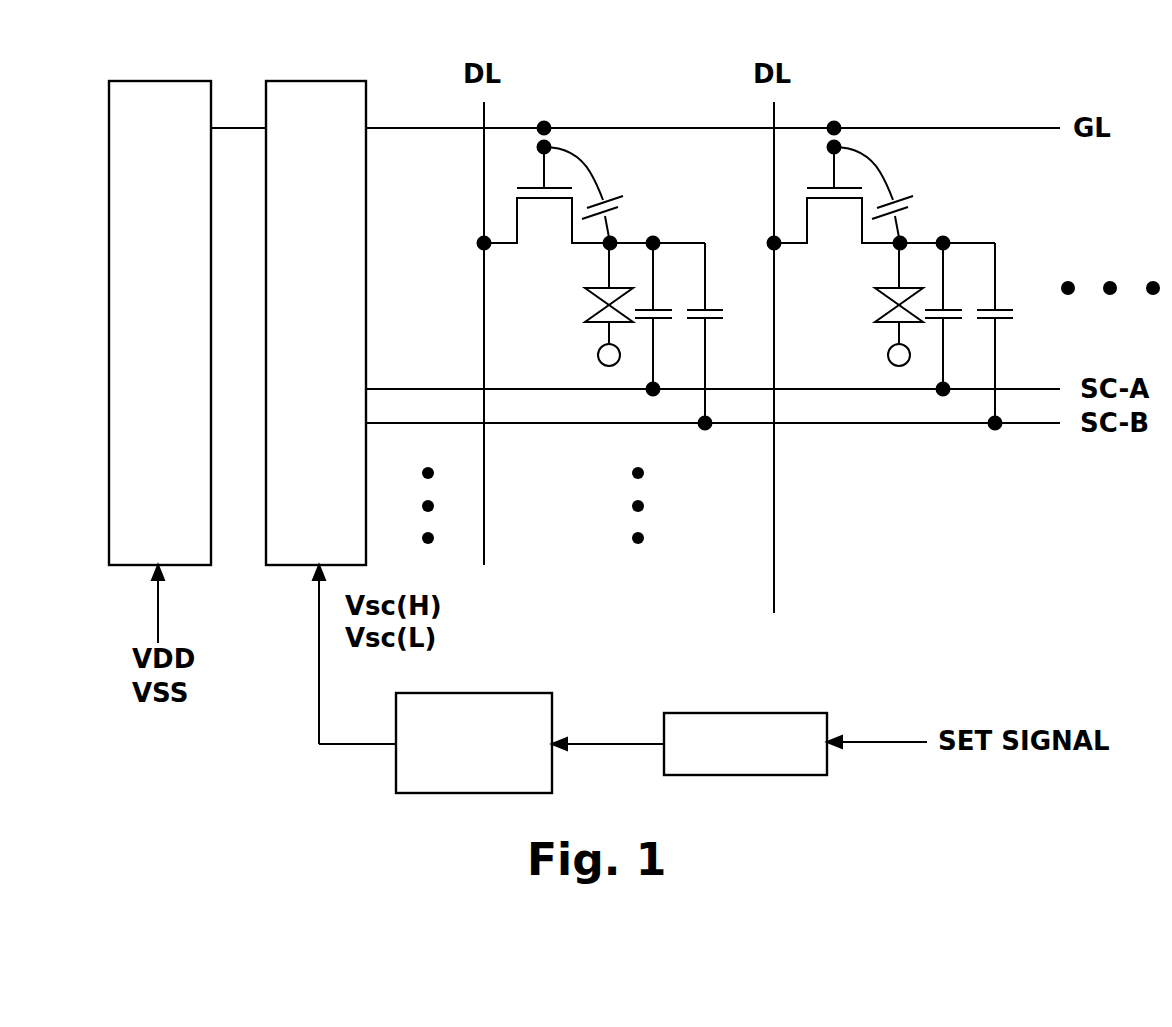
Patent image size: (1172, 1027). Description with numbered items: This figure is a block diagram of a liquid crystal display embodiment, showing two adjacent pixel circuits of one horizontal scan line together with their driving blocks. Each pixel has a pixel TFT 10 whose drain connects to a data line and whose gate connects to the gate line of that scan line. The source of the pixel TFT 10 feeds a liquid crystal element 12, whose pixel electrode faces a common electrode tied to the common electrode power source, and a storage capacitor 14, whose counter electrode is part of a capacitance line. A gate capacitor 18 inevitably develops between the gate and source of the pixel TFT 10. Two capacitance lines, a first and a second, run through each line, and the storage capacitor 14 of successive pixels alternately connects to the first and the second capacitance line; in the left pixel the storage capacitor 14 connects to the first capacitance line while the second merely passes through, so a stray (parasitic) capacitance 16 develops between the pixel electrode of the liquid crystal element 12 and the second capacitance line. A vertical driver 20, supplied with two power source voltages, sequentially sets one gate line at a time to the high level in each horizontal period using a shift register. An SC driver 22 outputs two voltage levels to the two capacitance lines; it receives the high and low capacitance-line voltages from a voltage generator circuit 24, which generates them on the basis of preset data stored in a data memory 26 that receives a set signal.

The pixel TFT 10 is at (737, 186).
The liquid crystal element 12 is at (719, 304).
The storage capacitor 14 is at (808, 319).
The stray (parasitic) capacitance 16 is at (860, 336).
The gate capacitor 18 is at (753, 195).
The vertical driver 20 is at (160, 81).
The SC driver 22 is at (318, 81).
The voltage generator circuit 24 is at (472, 693).
The data memory 26 is at (745, 713).